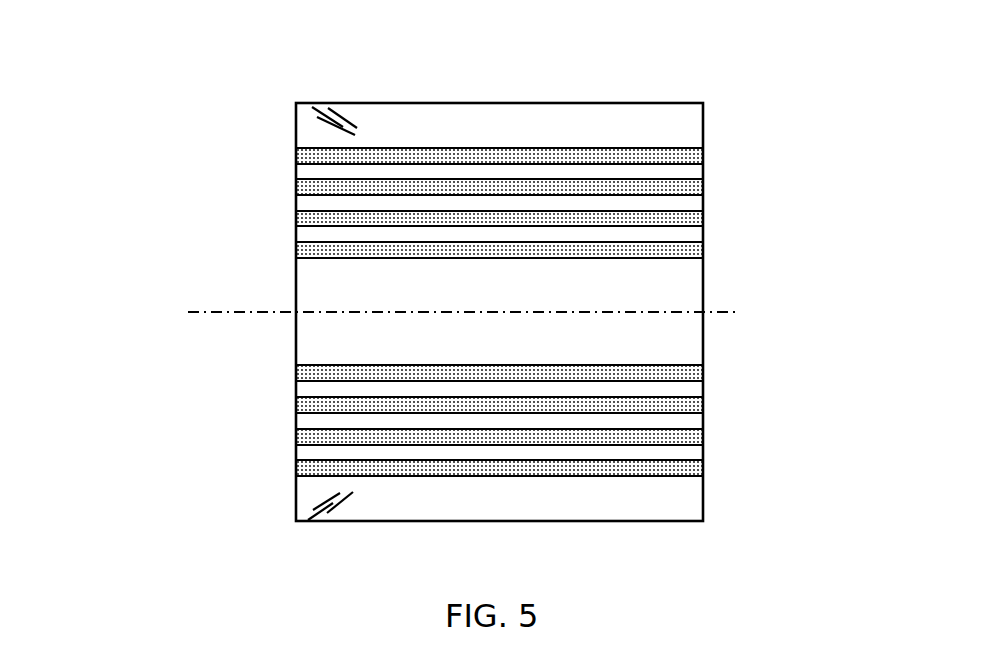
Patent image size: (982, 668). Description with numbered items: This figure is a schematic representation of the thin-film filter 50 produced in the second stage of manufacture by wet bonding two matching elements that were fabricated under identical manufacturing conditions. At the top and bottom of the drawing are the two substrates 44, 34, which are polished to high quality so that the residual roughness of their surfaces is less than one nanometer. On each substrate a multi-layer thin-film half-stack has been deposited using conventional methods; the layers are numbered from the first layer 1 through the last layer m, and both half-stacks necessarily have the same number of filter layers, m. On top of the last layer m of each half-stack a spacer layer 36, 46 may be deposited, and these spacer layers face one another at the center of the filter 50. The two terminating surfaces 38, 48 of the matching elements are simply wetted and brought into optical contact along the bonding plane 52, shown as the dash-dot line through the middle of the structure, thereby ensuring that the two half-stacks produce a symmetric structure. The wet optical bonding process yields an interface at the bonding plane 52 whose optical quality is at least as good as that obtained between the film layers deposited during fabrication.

The filter 50 is at (168, 131).
The substrate 44 is at (677, 125).
The first layer 1 is at (690, 155).
The last layer of half-stack m is at (693, 258).
The spacer layer 46 is at (677, 287).
The bonding plane 52 is at (228, 312).
The terminating surface 48 is at (577, 312).
The terminating surface 38 is at (375, 313).
The spacer layer 36 is at (317, 355).
The substrate 34 is at (690, 505).